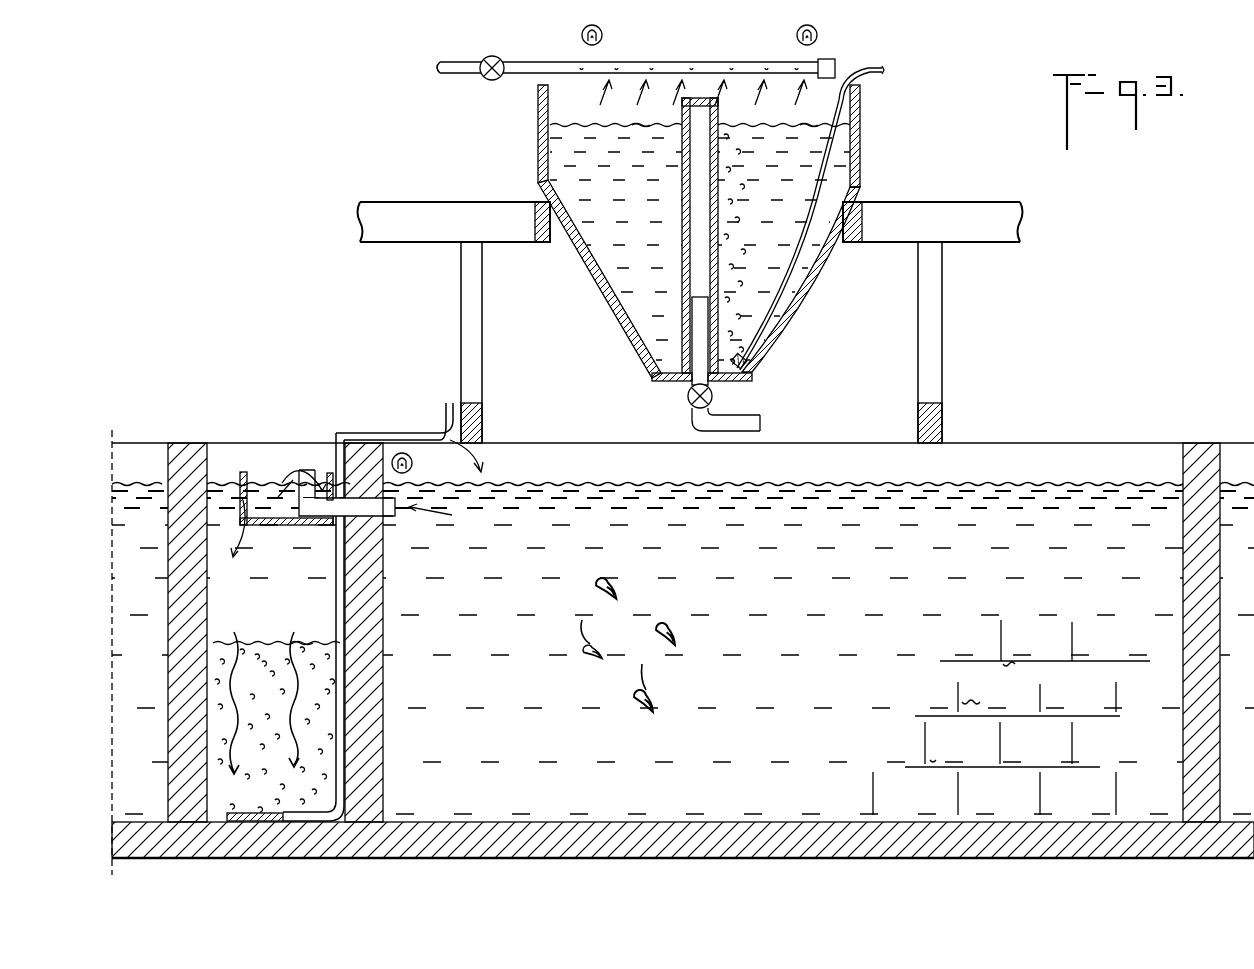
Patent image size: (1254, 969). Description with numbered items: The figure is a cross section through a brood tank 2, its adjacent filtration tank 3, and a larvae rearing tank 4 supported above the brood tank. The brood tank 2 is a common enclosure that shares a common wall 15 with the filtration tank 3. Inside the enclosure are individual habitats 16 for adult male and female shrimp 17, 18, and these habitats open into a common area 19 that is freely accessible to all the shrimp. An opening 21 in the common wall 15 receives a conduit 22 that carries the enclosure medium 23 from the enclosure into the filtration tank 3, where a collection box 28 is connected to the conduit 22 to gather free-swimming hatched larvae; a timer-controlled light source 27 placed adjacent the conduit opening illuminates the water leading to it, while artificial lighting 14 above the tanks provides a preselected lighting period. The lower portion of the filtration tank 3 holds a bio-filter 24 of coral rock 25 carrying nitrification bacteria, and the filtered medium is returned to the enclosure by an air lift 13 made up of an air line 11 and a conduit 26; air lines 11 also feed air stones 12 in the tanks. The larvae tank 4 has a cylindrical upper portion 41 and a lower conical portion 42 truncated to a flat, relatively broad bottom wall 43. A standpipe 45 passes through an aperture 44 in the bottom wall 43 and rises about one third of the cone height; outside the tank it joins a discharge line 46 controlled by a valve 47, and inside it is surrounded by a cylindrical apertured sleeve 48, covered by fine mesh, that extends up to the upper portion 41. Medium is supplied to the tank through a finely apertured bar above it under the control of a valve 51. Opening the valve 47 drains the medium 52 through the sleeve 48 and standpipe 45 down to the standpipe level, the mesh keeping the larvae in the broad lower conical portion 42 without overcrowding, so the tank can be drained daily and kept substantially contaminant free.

The brood tank 2 is at (1097, 483).
The filtration tank 3 is at (233, 455).
The larvae rearing tank 4 is at (538, 153).
The air line 11 is at (443, 403).
The air stone 12 is at (755, 367).
The air lift 13 is at (392, 430).
The artificial lighting 14 is at (580, 35).
The common wall 15 is at (360, 448).
The individual habitat 16 is at (1017, 640).
The adult male shrimp 17 is at (596, 590).
The adult female shrimp 18 is at (656, 636).
The common area 19 is at (776, 647).
The opening 21 is at (383, 518).
The conduit 22 is at (395, 517).
The enclosure medium 23 is at (640, 482).
The bio-filter 24 is at (262, 636).
The coral rock 25 is at (332, 630).
The conduit 26 is at (336, 578).
The light source 27 is at (412, 463).
The collection box 28 is at (247, 467).
The upper portion 41 is at (861, 148).
The lower conical portion 42 is at (787, 315).
The bottom wall 43 is at (653, 365).
The aperture 44 is at (641, 62).
The standpipe 45 is at (693, 310).
The discharge line 46 is at (711, 382).
The valve 47 is at (690, 402).
The apertured sleeve 48 is at (717, 126).
The valve 51 is at (490, 80).
The medium 52 is at (622, 302).